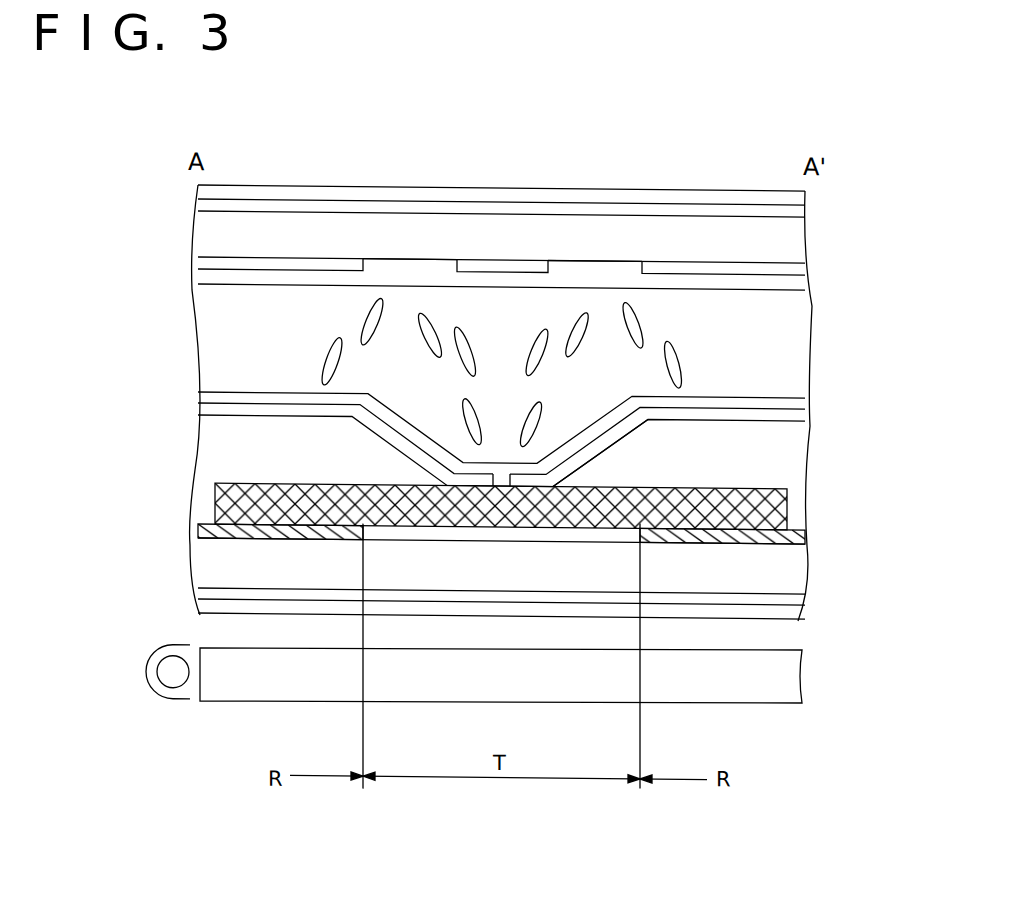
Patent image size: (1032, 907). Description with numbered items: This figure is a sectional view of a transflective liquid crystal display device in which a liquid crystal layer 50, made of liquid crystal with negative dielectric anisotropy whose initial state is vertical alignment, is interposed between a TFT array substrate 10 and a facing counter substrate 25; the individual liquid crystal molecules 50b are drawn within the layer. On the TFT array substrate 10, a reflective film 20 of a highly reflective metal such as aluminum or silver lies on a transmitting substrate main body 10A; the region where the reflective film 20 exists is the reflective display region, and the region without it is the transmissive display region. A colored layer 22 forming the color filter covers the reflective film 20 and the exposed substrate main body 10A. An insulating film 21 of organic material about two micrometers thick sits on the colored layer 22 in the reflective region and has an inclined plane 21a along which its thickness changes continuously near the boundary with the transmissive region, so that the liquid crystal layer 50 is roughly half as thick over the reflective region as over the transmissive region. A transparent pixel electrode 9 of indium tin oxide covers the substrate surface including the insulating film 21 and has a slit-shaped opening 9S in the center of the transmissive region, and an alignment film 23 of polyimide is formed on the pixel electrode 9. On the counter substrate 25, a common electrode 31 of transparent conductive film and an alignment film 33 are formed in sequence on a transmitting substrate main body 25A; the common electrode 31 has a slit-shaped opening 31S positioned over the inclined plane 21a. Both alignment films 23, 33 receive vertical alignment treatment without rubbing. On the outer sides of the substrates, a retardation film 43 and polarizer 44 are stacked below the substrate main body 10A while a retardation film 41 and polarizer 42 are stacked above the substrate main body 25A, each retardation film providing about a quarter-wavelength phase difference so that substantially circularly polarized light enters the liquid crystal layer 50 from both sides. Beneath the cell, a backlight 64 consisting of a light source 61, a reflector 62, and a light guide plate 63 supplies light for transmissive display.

The polarizer 42 is at (807, 196).
The retardation film 41 is at (807, 206).
The substrate main body 25A is at (790, 227).
The common electrode 31 is at (807, 262).
The slit-shaped opening 31S is at (378, 262).
The alignment film 33 is at (807, 277).
The counter substrate 25 is at (187, 253).
The liquid crystal layer 50 is at (609, 374).
The liquid crystal molecule 50b is at (638, 318).
The alignment film 23 is at (808, 389).
The pixel electrode 9 is at (808, 410).
The slit-shaped opening 9S is at (500, 472).
The insulating film 21 is at (549, 431).
The inclined plane 21a is at (592, 448).
The colored layer 22 is at (785, 499).
The reflective film 20 is at (800, 534).
The TFT array substrate 10 is at (167, 531).
The substrate main body 10A is at (790, 571).
The retardation film 43 is at (800, 591).
The polarizer 44 is at (800, 606).
The light guide plate 63 is at (802, 671).
The backlight 64 is at (132, 686).
The reflector 62 is at (143, 679).
The light source 61 is at (173, 688).